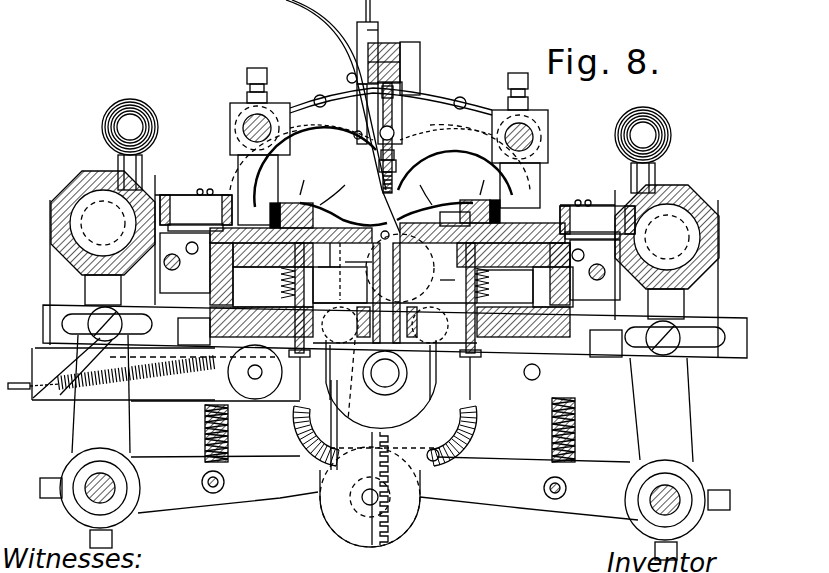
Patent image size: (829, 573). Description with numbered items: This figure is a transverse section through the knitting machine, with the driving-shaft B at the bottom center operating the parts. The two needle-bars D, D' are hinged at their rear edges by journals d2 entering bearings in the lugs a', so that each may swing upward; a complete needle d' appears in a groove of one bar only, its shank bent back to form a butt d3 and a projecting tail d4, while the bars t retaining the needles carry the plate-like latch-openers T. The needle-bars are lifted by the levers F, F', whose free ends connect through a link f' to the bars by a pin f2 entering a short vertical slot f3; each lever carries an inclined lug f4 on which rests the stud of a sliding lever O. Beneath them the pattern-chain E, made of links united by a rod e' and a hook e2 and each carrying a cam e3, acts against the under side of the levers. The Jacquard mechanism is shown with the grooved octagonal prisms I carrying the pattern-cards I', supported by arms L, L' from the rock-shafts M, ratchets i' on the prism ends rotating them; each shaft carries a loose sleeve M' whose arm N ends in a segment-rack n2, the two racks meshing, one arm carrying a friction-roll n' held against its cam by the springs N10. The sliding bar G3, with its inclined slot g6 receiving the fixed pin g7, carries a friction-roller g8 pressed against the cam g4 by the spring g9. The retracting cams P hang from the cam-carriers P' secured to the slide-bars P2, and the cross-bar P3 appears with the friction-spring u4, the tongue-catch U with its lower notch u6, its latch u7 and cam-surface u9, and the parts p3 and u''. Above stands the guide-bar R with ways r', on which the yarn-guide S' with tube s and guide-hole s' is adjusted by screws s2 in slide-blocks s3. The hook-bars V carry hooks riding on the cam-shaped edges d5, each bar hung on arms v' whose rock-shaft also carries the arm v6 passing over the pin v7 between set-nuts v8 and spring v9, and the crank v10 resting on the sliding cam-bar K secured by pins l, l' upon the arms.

The lever F' is at (390, 268).
The lever F is at (525, 287).
The sliding lever O is at (395, 288).
The pin v7 is at (389, 323).
The set-nuts v8 is at (381, 316).
The spring v9 is at (384, 281).
The arm v6 is at (525, 368).
The arms v' is at (380, 372).
The link f' is at (383, 255).
The pin f2 is at (329, 271).
The vertical slot f3 is at (455, 215).
The lug f4 is at (447, 273).
The cam-shaped edges d5 is at (383, 230).
The sliding cam-bar K is at (748, 350).
The pin or screw l is at (89, 322).
The pin or screw l' is at (675, 351).
The arm or crank v10 is at (400, 337).
The grooved octagonal prism I is at (385, 245).
The pattern-cards I' is at (382, 266).
The hand wheel p3 is at (120, 127).
The cam P is at (389, 164).
The cam-carrier P' is at (386, 132).
The slide-bar P2 is at (245, 118).
The butts d3 is at (397, 204).
The ratchet i' is at (385, 190).
The tails d4 is at (178, 224).
The lugs a' is at (390, 266).
The journals d2 is at (388, 248).
The latch-openers T is at (380, 166).
The bars t is at (392, 186).
The needle-bar D is at (343, 207).
The needle-bar D' is at (435, 203).
The needles d' is at (376, 190).
The tube s is at (343, 119).
The guide-hole s' is at (378, 11).
The yarn-guide S' is at (352, 83).
The slide-blocks s3 is at (378, 32).
The guide-bar R is at (404, 45).
The ways r' is at (388, 56).
The screws s2 is at (349, 107).
The friction-spring u4 is at (445, 96).
The tongue-catch U is at (397, 137).
The notch or recess u6 is at (396, 94).
The bell-crank-lever latch u7 is at (396, 158).
The thread u'' is at (400, 176).
The cam-surface u9 is at (374, 166).
The cross-bar P3 is at (391, 130).
The driving-shaft B is at (408, 373).
The hook-bar V is at (385, 373).
The cam g4 is at (351, 380).
The arm L is at (110, 394).
The arm L' is at (677, 410).
The sleeve M' is at (398, 494).
The rock-shaft M is at (384, 516).
The arm N is at (384, 460).
The springs N10 is at (230, 424).
The cam e3 is at (315, 455).
The hook e2 is at (432, 458).
The pattern-chain E is at (342, 425).
The rod e' is at (384, 467).
The friction-roll n' is at (371, 497).
The segment-rack n2 is at (380, 535).
The sliding bar G3 is at (153, 374).
The pin g7 is at (61, 367).
The inclined slot g6 is at (70, 367).
The spring g9 is at (62, 386).
The friction-roller g8 is at (255, 372).